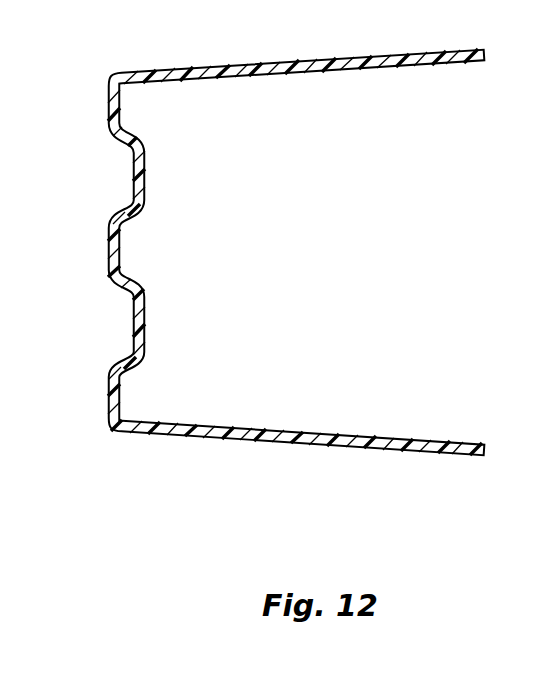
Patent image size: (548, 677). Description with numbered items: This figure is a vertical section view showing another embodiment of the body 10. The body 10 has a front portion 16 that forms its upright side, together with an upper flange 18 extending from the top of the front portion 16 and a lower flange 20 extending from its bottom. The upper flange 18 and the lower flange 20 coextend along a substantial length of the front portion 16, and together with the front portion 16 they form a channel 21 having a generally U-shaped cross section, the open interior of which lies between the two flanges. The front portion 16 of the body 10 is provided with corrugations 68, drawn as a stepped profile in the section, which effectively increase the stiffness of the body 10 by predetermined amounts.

The body 10 is at (362, 460).
The front portion 16 is at (122, 248).
The upper flange 18 is at (325, 60).
The lower flange 20 is at (312, 428).
The channel 21 is at (422, 221).
The corrugations 68 is at (120, 182).